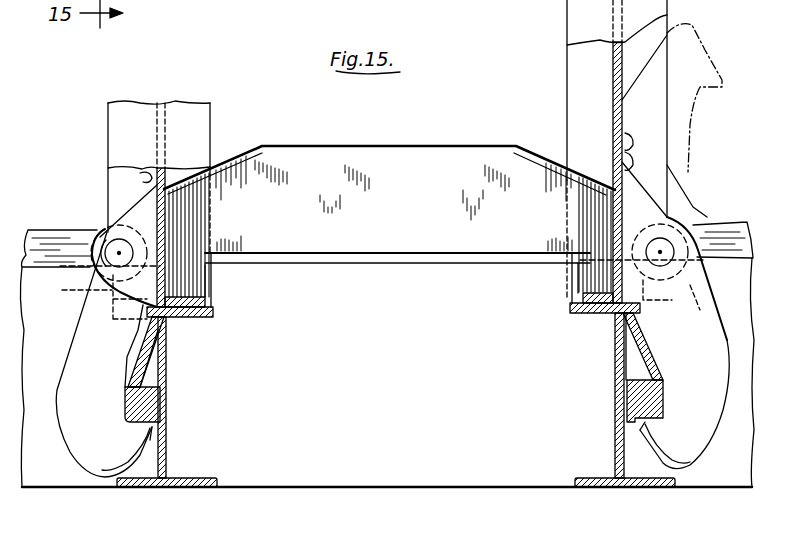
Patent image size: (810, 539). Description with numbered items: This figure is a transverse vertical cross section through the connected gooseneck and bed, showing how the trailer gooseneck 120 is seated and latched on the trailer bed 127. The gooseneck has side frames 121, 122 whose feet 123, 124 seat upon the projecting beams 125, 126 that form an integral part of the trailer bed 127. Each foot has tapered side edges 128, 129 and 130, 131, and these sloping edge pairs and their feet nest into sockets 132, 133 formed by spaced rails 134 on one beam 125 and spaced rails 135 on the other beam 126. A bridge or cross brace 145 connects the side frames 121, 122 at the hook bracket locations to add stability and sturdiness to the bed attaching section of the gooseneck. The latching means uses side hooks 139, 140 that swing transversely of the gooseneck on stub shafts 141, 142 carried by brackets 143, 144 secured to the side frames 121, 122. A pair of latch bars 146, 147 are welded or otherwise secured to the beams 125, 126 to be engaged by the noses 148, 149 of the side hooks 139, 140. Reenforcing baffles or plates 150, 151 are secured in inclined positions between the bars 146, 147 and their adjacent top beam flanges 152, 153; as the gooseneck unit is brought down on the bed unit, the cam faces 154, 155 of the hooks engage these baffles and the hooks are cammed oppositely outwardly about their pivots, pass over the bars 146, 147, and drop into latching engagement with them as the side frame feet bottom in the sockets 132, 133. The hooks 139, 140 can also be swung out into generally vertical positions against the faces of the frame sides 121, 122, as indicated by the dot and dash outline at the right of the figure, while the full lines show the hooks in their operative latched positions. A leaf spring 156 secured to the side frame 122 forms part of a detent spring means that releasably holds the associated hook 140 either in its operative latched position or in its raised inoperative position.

The trailer gooseneck 120 is at (96, 125).
The side frame 121 is at (201, 122).
The side frame 122 is at (575, 90).
The foot 123 is at (187, 317).
The foot 124 is at (600, 313).
The projecting beam 125 is at (170, 348).
The projecting beam 126 is at (618, 366).
The trailer bed 127 is at (379, 464).
The tapered side edge 128 is at (135, 305).
The tapered side edge 129 is at (213, 283).
The tapered side edge 130 is at (573, 290).
The tapered side edge 131 is at (718, 288).
The socket 132 is at (203, 267).
The socket 133 is at (583, 263).
The spaced rails 134 is at (238, 305).
The spaced rails 135 is at (723, 250).
The side hook 139 is at (80, 418).
The side hook 140 is at (693, 55).
The stub shaft 141 is at (115, 250).
The stub shaft 142 is at (643, 203).
The bracket 143 is at (113, 213).
The bracket 144 is at (672, 178).
The cross brace 145 is at (408, 206).
The latch bar 146 is at (167, 412).
The latch bar 147 is at (620, 408).
The nose 148 is at (153, 438).
The nose 149 is at (643, 430).
The reenforcing baffle 150 is at (150, 373).
The reenforcing baffle 151 is at (623, 348).
The top beam flange 152 is at (137, 332).
The top beam flange 153 is at (647, 313).
The cam face 154 is at (135, 463).
The cam face 155 is at (663, 450).
The leaf spring 156 is at (140, 173).